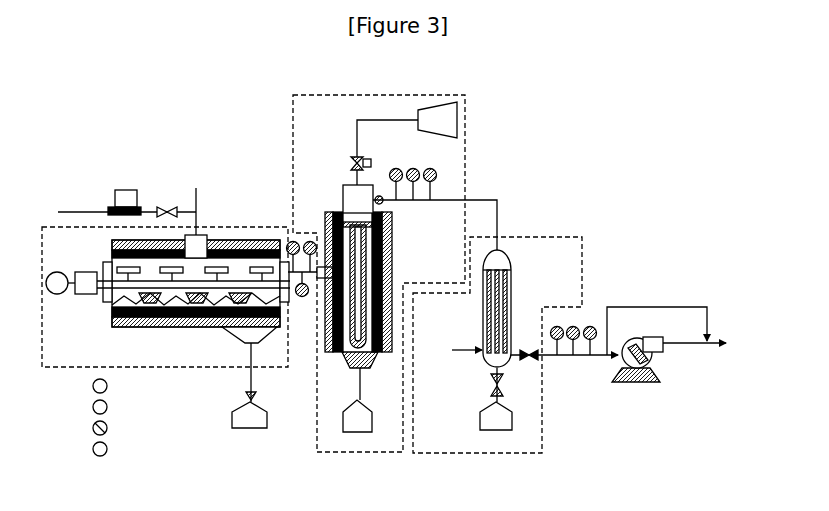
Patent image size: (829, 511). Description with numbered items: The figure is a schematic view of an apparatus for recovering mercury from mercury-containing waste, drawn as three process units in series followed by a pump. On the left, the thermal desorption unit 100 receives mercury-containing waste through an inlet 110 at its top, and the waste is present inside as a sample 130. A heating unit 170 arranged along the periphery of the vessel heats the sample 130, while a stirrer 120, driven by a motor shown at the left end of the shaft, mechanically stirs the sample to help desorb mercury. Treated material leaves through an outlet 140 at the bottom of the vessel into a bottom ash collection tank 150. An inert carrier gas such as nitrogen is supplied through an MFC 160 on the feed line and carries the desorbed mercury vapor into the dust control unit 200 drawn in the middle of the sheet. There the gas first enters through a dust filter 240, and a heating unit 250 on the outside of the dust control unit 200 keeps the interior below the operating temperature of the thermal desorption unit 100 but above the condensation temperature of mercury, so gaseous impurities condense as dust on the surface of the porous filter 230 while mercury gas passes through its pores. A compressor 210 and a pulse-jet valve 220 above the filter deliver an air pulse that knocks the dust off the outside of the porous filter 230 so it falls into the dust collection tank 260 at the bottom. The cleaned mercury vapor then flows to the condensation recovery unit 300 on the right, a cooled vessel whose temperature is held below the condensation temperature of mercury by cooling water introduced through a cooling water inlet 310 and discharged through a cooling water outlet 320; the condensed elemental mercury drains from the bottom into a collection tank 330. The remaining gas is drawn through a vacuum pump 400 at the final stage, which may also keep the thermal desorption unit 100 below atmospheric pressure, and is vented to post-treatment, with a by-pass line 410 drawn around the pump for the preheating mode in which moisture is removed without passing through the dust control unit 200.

The thermal desorption unit 100 is at (82, 368).
The inlet 110 is at (196, 216).
The stirrer 120 is at (73, 273).
The sample 130 is at (131, 330).
The outlet 140 is at (253, 364).
The bottom ash collection tank 150 is at (249, 424).
The MFC 160 is at (119, 197).
The heating unit 170 is at (128, 306).
The dust control unit 200 is at (357, 457).
The compressor 210 is at (437, 120).
The pulse-jet valve 220 is at (350, 163).
The porous filter 230 is at (394, 262).
The dust filter 240 is at (346, 232).
The heating unit 250 is at (347, 357).
The dust collection tank 260 is at (357, 423).
The condensation recovery unit 300 is at (542, 430).
The cooling water inlet 310 is at (452, 350).
The cooling water outlet 320 is at (511, 270).
The collection tank 330 is at (496, 408).
The vacuum pump 400 is at (683, 367).
The by-pass line 410 is at (657, 322).